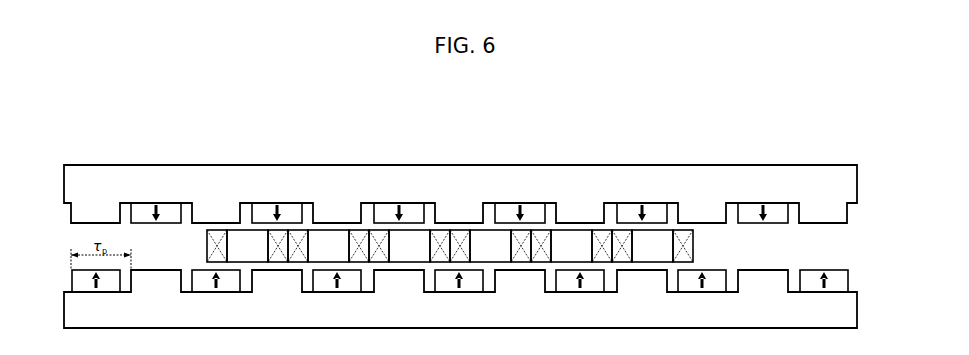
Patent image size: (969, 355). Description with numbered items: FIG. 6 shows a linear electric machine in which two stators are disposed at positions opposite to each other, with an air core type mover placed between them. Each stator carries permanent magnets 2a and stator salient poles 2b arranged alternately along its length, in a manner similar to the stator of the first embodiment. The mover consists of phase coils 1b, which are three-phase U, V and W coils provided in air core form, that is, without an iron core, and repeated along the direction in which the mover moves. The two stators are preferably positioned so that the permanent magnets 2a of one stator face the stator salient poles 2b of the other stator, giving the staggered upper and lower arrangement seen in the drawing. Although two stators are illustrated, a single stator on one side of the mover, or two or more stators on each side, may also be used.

The phase coils 1b is at (300, 235).
The permanent magnets 2a is at (388, 209).
The stator salient poles 2b is at (448, 209).